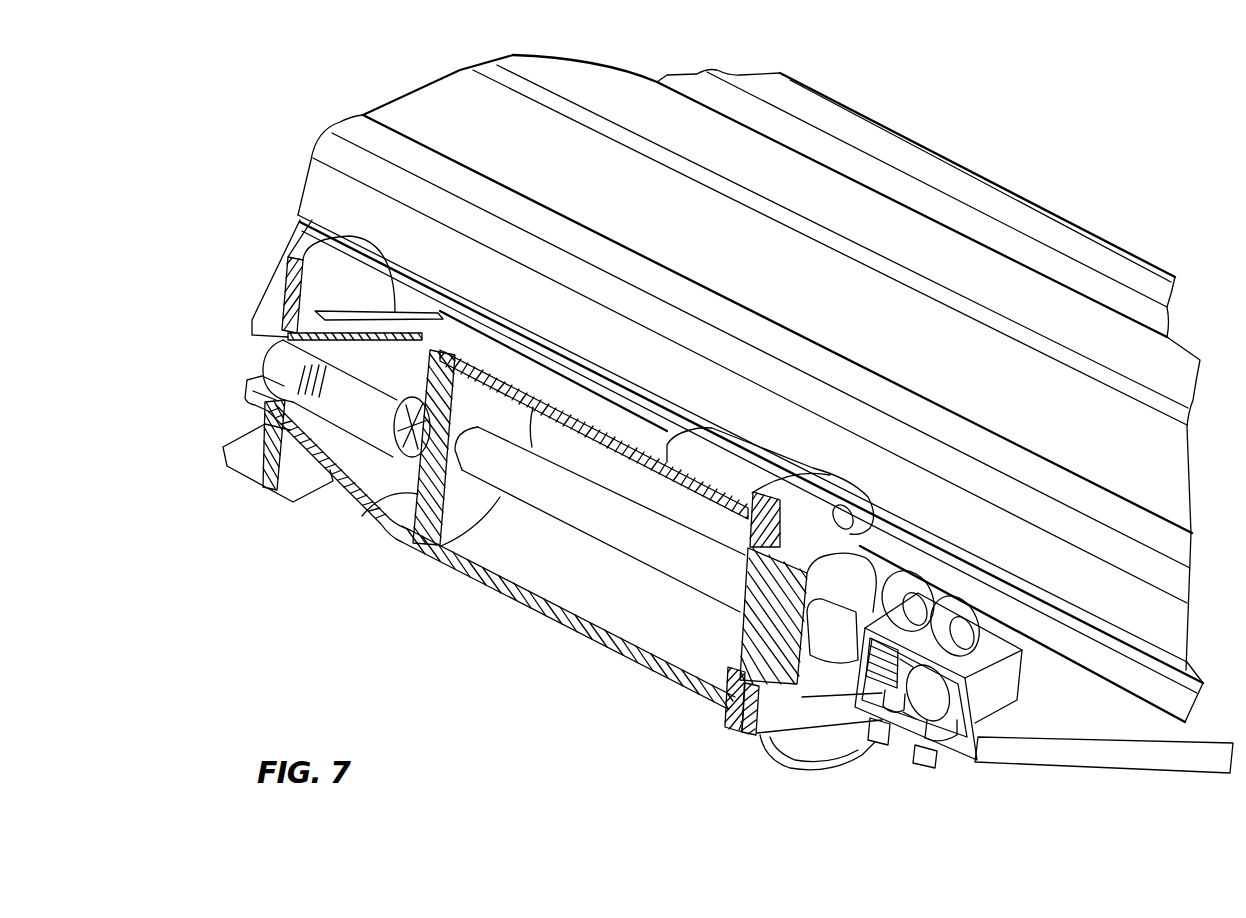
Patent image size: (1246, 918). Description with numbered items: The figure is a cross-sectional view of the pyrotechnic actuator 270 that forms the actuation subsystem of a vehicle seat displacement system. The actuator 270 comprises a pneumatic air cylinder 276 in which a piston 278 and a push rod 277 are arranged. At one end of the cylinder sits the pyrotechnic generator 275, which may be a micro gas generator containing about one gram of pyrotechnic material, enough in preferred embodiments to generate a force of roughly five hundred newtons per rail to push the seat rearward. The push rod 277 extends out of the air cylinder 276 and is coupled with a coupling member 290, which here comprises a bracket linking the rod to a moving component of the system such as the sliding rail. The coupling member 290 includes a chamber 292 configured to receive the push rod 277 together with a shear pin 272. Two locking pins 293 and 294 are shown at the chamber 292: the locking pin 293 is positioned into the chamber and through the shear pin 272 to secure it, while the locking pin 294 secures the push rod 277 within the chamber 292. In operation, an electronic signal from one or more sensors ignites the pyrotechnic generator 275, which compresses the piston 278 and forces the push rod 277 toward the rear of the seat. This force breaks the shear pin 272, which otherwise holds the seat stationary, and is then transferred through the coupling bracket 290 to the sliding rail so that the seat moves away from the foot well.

The pyrotechnic actuator 270 is at (546, 659).
The pyrotechnic generator 275 is at (347, 407).
The pneumatic air cylinder 276 is at (567, 577).
The push rod 277 is at (527, 492).
The piston 278 is at (372, 492).
The coupling member 290 is at (992, 772).
The chamber 292 is at (975, 704).
The locking pin 293 is at (905, 640).
The locking pin 294 is at (893, 603).
The shear pin 272 is at (922, 710).